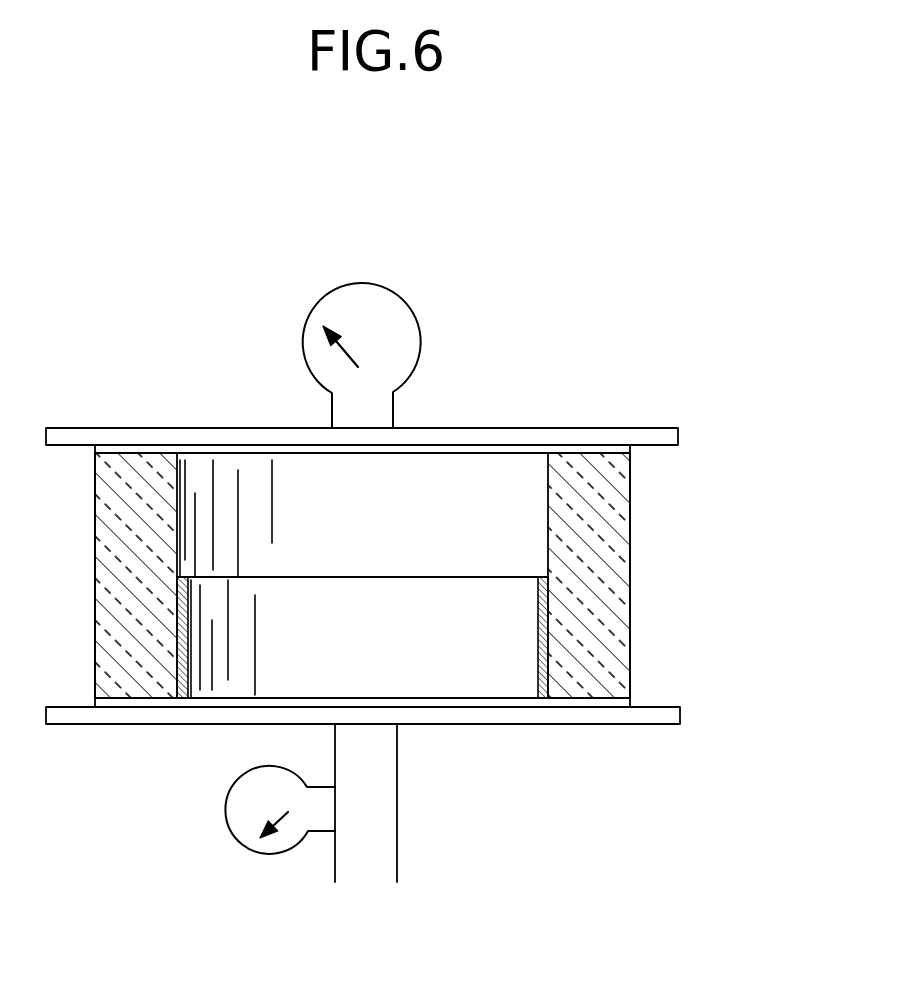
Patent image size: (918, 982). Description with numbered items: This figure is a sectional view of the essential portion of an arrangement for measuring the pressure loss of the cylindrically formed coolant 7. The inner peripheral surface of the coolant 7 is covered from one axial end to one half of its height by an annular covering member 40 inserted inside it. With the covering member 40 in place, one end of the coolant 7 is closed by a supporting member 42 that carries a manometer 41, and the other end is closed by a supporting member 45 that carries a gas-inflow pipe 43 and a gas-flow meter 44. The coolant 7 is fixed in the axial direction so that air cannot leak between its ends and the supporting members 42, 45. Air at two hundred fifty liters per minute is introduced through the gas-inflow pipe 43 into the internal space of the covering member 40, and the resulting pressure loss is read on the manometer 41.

The annular covering member 40 is at (510, 592).
The manometer 41 is at (398, 292).
The supporting member 42 is at (480, 428).
The gas-inflow pipe 43 is at (380, 808).
The gas-flow meter 44 is at (242, 803).
The supporting member 45 is at (602, 715).
The coolant 7 is at (613, 560).